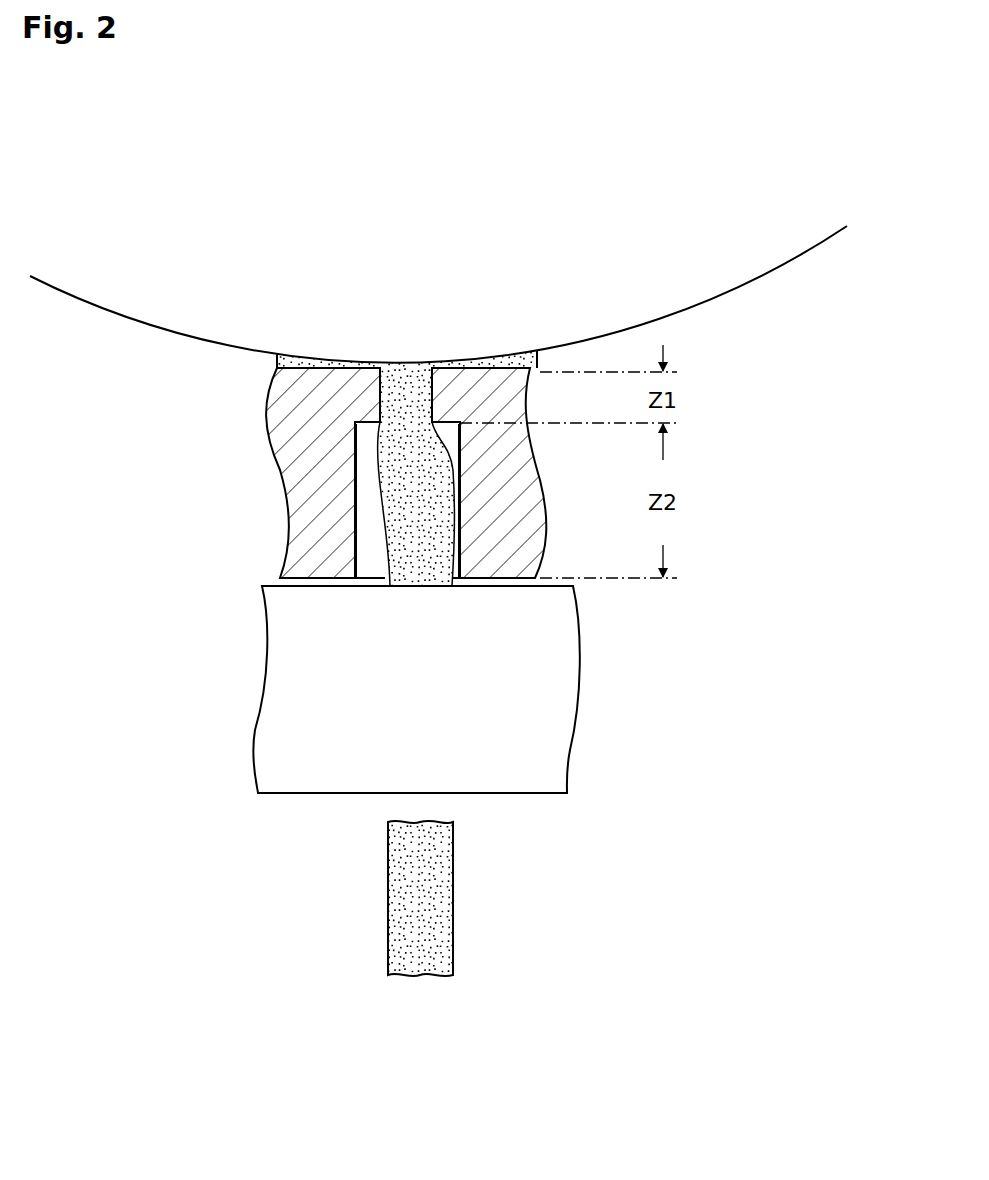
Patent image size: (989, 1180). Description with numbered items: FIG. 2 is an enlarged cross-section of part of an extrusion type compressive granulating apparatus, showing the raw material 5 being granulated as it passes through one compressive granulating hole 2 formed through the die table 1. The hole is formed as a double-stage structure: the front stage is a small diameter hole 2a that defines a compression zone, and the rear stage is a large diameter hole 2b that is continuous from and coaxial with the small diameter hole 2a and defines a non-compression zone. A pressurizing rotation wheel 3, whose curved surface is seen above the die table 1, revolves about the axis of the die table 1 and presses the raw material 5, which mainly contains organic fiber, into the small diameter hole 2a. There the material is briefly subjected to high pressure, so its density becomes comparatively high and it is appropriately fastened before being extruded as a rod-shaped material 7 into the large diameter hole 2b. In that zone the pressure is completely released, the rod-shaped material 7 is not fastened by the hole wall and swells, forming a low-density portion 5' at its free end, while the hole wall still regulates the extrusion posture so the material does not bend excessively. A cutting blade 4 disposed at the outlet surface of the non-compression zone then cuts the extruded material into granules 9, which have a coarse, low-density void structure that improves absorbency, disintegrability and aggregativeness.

The die table 1 is at (505, 402).
The compressive granulating hole 2 is at (367, 478).
The small diameter hole 2a is at (380, 396).
The large diameter hole 2b is at (370, 537).
The pressurizing rotation wheel 3 is at (735, 272).
The cutting blade 4 is at (280, 717).
The raw material 5 is at (407, 346).
The low-density portion 5' is at (421, 600).
The rod-shaped material 7 is at (522, 512).
The granules 9 is at (415, 900).